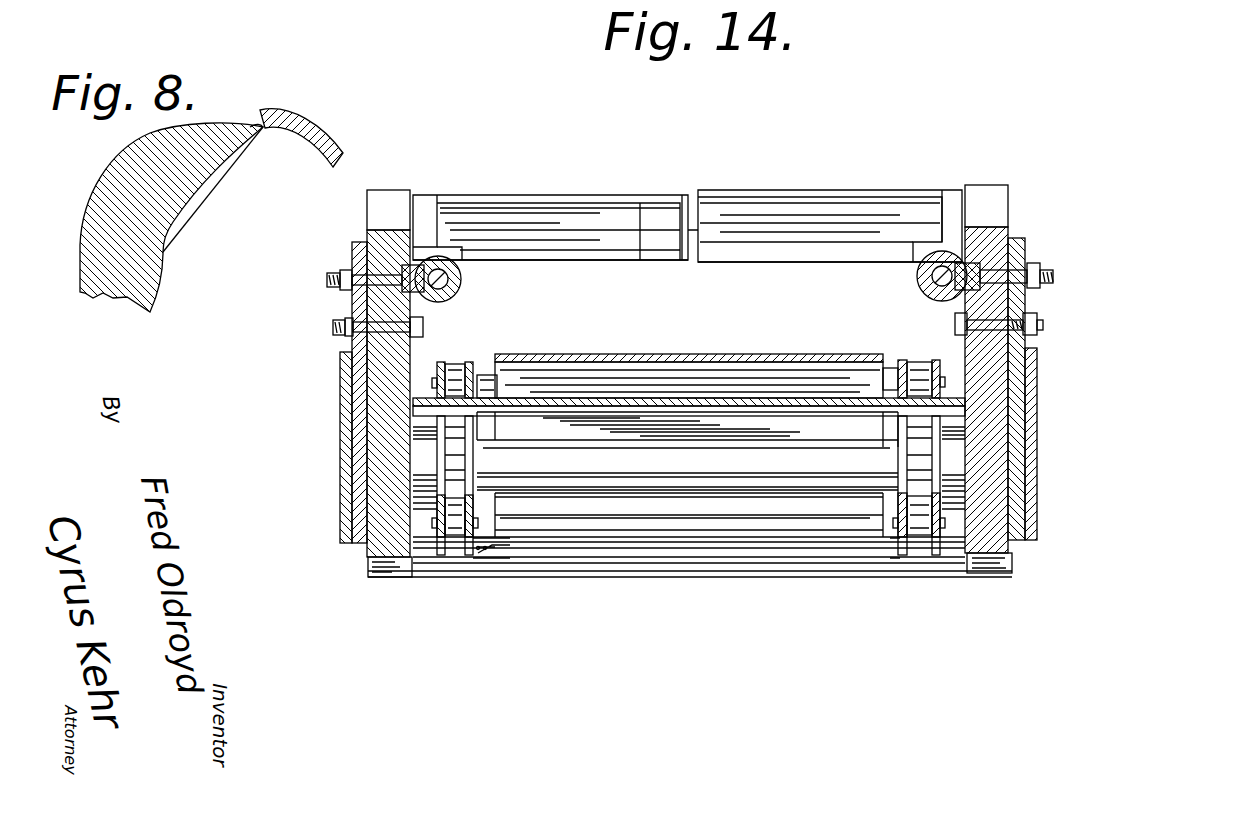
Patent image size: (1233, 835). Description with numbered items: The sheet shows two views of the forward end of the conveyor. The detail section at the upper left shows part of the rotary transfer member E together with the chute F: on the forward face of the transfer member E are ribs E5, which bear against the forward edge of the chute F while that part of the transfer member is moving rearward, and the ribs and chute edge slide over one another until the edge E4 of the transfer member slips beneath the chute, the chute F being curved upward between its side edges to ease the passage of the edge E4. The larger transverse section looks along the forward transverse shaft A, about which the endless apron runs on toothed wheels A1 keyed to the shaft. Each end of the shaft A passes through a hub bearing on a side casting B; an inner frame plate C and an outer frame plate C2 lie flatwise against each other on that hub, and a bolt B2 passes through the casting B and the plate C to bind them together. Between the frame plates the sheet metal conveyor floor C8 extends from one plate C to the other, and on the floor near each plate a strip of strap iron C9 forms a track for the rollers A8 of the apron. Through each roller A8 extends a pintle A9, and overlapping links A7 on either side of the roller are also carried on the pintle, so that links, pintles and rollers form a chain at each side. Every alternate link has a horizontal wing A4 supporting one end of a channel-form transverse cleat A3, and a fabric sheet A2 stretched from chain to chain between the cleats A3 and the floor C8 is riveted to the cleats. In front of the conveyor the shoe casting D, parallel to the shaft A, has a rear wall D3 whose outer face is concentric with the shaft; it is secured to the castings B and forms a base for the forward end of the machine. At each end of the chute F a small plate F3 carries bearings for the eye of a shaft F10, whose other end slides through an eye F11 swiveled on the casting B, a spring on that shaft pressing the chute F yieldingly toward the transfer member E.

In FIG. 8, the transfer member E is at (163, 217).
In FIG. 14, the transfer member E is at (687, 198).
In FIG. 8, the edge of the transfer member E4 is at (266, 130).
In FIG. 14, the edge of the transfer member E4 is at (655, 225).
In FIG. 8, the rib E5 is at (200, 190).
In FIG. 14, the rib E5 is at (427, 215).
In FIG. 8, the chute F is at (270, 121).
In FIG. 14, the chute F is at (687, 289).
In FIG. 14, the plate F3 is at (446, 262).
In FIG. 14, the shaft F10 is at (440, 258).
In FIG. 14, the eye F11 is at (338, 327).
In FIG. 14, the side casting B is at (343, 462).
In FIG. 14, the bolt B2 is at (355, 340).
In FIG. 14, the inner frame plate C is at (358, 375).
In FIG. 14, the outer frame plate C2 is at (360, 500).
In FIG. 14, the conveyor floor C8 is at (688, 242).
In FIG. 14, the strap iron C9 is at (415, 403).
In FIG. 14, the forward transverse shaft A is at (647, 467).
In FIG. 14, the toothed wheel A1 is at (920, 457).
In FIG. 14, the fabric sheet A2 is at (783, 353).
In FIG. 14, the transverse cleat A3 is at (823, 547).
In FIG. 14, the horizontal wing A4 is at (607, 397).
In FIG. 14, the link A7 is at (487, 372).
In FIG. 14, the roller A8 is at (455, 367).
In FIG. 14, the pintle A9 is at (437, 383).
In FIG. 14, the shoe casting D is at (600, 560).
In FIG. 14, the rear wall D3 is at (417, 578).